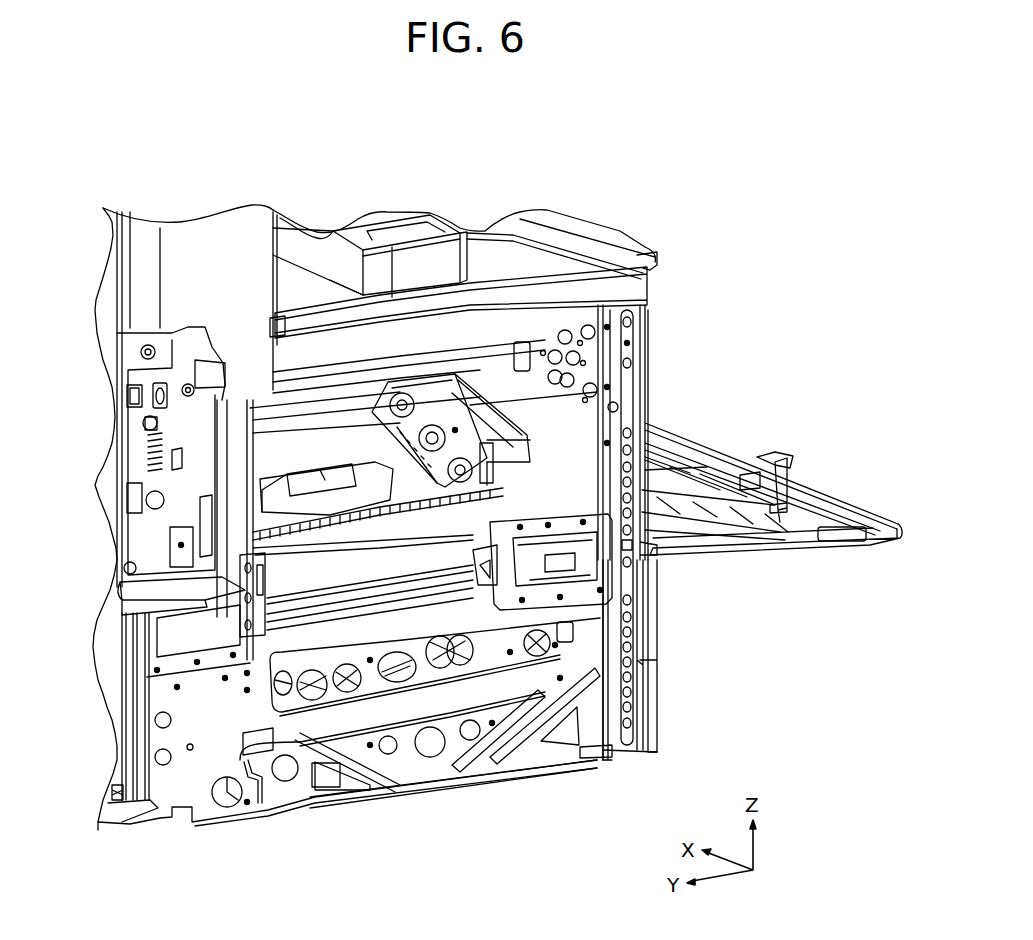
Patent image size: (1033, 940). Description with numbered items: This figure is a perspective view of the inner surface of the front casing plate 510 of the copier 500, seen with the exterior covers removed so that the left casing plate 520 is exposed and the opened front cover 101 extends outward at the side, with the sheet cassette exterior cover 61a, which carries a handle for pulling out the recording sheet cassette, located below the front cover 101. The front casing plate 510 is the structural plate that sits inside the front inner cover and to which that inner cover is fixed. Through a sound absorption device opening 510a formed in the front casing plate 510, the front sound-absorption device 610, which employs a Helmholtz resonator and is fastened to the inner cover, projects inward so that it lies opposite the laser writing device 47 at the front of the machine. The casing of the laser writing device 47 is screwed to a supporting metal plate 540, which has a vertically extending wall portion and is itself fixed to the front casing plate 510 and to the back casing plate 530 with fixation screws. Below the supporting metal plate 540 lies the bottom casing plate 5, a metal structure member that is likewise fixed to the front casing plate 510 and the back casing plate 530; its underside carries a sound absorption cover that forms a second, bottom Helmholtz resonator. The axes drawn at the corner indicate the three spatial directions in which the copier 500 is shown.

The copier 500 is at (638, 170).
The front sound-absorption device 610 is at (428, 403).
The front casing plate 510 is at (578, 412).
The sound absorption device opening 510a is at (513, 448).
The back casing plate 530 is at (248, 423).
The front cover 101 is at (797, 545).
The sheet cassette exterior cover 61a is at (687, 704).
The supporting metal plate 540 is at (287, 550).
The laser writing device 47 is at (337, 493).
The bottom casing plate 5 is at (397, 557).
The left casing plate 520 is at (483, 768).